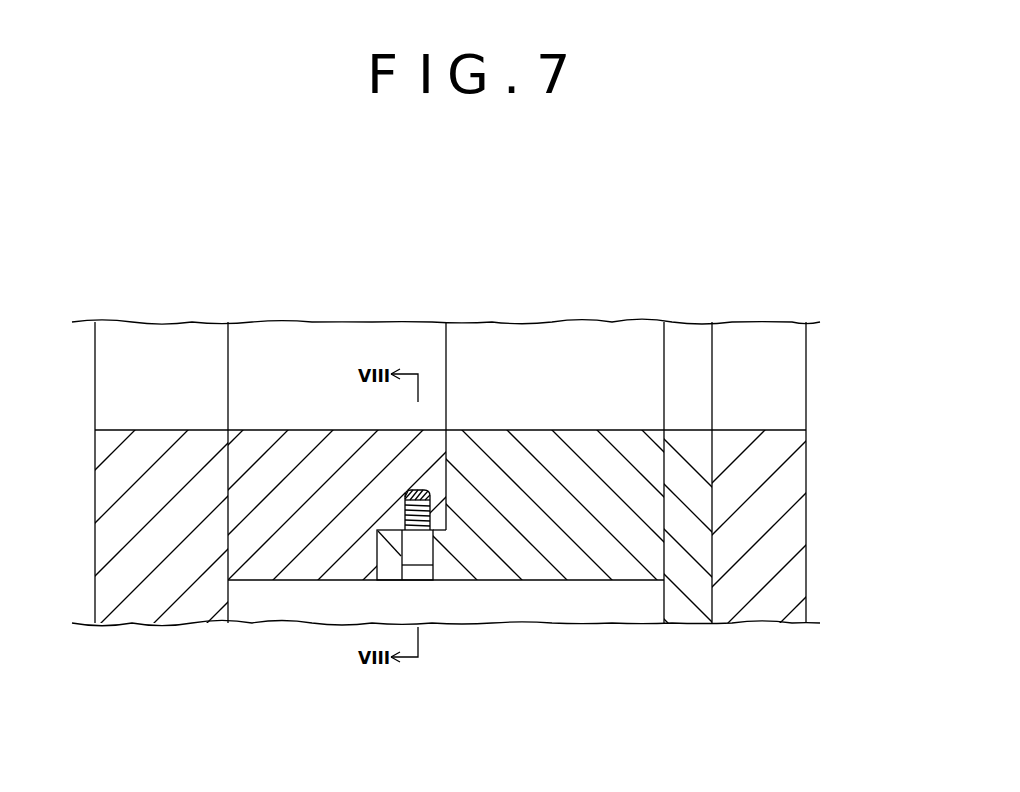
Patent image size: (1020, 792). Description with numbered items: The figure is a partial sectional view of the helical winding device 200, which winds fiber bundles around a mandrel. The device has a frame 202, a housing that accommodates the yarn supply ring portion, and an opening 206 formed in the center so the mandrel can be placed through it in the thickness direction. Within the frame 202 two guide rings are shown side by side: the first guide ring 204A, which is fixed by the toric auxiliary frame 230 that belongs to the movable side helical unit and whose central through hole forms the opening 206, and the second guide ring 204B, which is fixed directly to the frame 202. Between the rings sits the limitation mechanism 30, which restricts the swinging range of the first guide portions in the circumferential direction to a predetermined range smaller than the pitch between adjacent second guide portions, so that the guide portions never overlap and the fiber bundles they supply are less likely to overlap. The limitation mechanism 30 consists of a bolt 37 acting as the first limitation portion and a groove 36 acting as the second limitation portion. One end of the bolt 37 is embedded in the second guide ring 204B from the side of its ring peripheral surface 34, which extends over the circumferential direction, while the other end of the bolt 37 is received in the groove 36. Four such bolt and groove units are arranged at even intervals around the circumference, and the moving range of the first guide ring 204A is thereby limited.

The helical winding device 200 is at (683, 288).
The frame 202 is at (95, 513).
The first guide ring 204A is at (566, 582).
The second guide ring 204B is at (294, 582).
The opening 206 is at (533, 395).
The auxiliary frame 230 is at (682, 620).
The limitation mechanism 30 is at (427, 590).
The ring peripheral surface 34 is at (440, 538).
The groove 36 is at (409, 582).
The bolt 37 is at (421, 583).